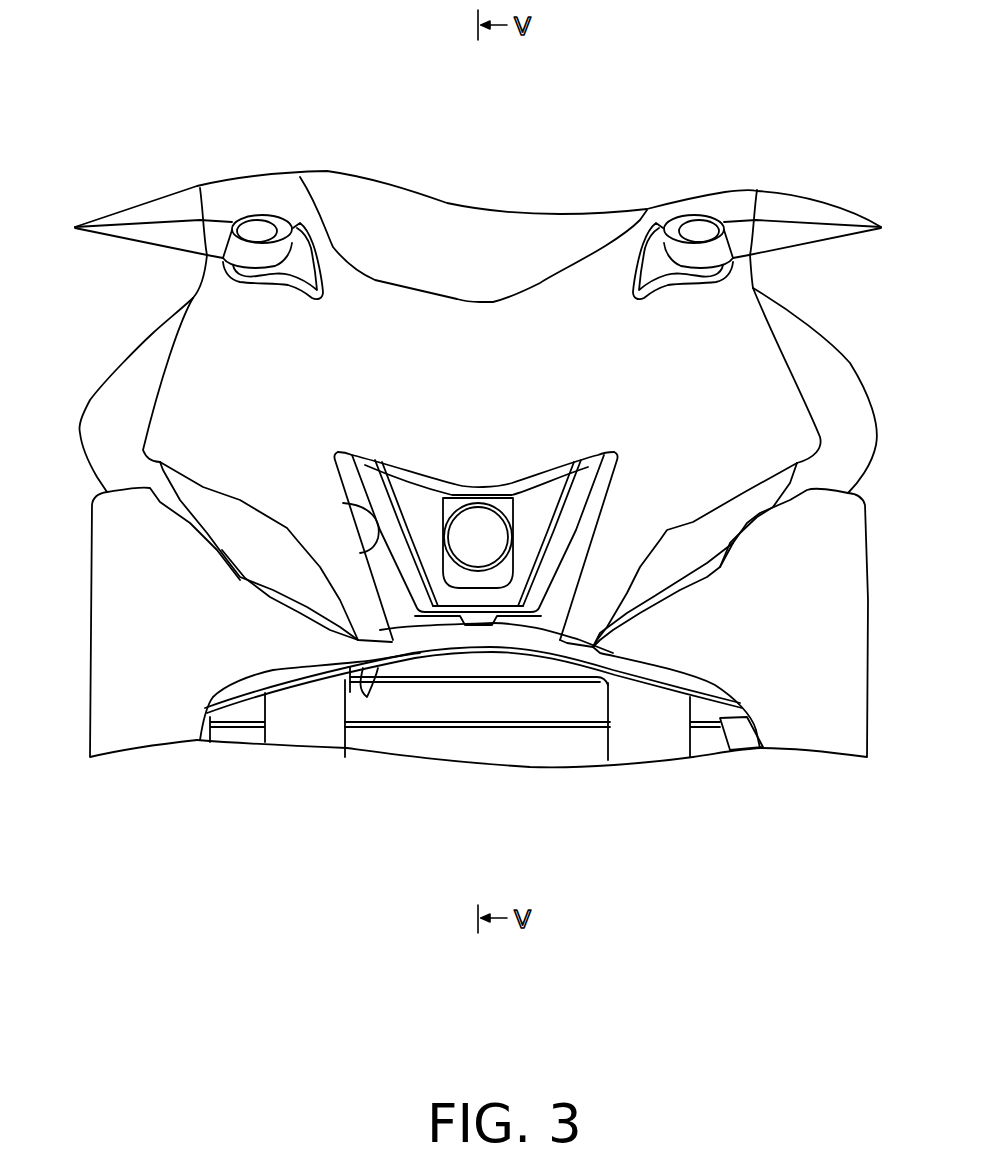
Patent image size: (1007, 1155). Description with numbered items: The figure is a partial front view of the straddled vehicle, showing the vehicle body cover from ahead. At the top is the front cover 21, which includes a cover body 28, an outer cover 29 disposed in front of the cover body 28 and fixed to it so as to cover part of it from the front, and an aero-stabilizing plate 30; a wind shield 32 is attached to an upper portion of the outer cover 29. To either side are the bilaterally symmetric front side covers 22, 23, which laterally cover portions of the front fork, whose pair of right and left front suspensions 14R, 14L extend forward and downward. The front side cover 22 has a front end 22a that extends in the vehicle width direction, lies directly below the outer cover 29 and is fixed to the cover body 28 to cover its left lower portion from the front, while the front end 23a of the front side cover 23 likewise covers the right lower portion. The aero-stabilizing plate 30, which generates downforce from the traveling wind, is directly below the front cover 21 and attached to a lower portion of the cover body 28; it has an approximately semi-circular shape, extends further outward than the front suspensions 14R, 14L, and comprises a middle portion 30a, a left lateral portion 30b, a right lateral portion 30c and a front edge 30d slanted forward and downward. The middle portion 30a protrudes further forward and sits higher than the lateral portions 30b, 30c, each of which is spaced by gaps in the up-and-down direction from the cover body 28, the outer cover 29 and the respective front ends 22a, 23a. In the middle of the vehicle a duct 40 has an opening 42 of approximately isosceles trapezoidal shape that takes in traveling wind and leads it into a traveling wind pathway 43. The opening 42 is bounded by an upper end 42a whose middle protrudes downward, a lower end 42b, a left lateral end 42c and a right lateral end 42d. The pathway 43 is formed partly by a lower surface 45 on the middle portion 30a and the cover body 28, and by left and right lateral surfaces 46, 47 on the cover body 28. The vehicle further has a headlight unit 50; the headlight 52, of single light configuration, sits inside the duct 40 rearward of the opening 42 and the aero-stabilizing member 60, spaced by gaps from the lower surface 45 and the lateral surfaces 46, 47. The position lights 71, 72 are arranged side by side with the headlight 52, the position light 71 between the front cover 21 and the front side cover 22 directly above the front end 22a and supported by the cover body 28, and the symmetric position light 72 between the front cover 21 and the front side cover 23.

The front cover 21 is at (150, 313).
The cover body 28 is at (133, 364).
The outer cover 29 is at (175, 414).
The wind shield 32 is at (395, 213).
The front side cover 23 is at (128, 733).
The front side cover 22 is at (833, 733).
The front end 23a is at (312, 640).
The front end 22a is at (665, 637).
The front suspension 14R is at (303, 730).
The front suspension 14L is at (652, 747).
The aero-stabilizing plate 30 is at (572, 670).
The middle portion 30a is at (490, 640).
The left lateral portion 30b is at (630, 670).
The right lateral portion 30c is at (318, 667).
The front edge 30d is at (410, 658).
The duct 40 is at (557, 602).
The opening 42 is at (428, 658).
The upper end 42a is at (348, 450).
The lower end 42b is at (457, 653).
The left lateral end 42c is at (610, 507).
The right lateral end 42d is at (343, 503).
The traveling wind pathway 43 is at (535, 637).
The lower surface 45 is at (405, 627).
The left lateral surface 46 is at (570, 577).
The right lateral surface 47 is at (386, 573).
The headlight unit 50 is at (497, 493).
The headlight 52 is at (467, 511).
The aero-stabilizing member 60 is at (540, 503).
The position light 71 is at (703, 520).
The position light 72 is at (280, 537).